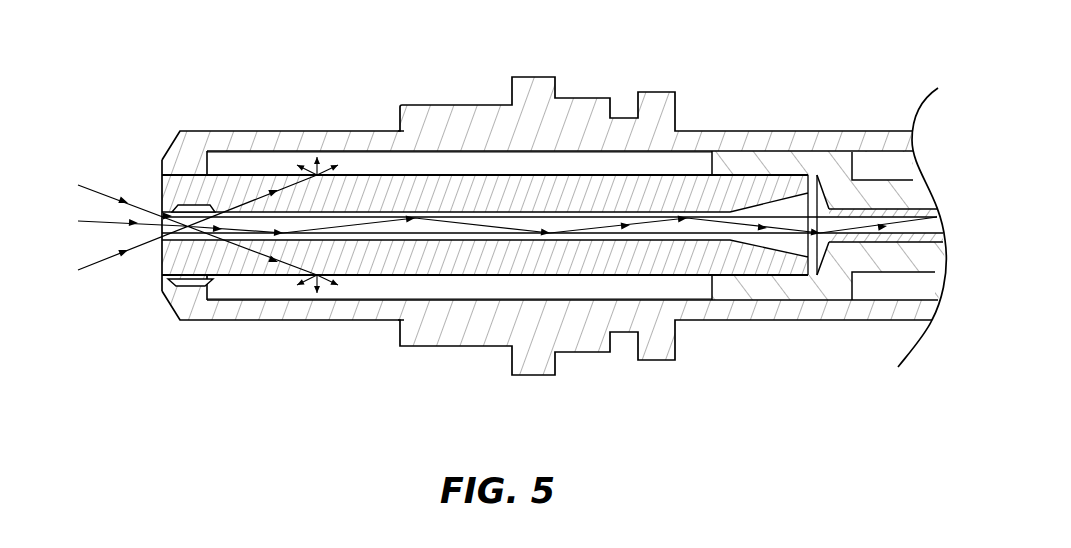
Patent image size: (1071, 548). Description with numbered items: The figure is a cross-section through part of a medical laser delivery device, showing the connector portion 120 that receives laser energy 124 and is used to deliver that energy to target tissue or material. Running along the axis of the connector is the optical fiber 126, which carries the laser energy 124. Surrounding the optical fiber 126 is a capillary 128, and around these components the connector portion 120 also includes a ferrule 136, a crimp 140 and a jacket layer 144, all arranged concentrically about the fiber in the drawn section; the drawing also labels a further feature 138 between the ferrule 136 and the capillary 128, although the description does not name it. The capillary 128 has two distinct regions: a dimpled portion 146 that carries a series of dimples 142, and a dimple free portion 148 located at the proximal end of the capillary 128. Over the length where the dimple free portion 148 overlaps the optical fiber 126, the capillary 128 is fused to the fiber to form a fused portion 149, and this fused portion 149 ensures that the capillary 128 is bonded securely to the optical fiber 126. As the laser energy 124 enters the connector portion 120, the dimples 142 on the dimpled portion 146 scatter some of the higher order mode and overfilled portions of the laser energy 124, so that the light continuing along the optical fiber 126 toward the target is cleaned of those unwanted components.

The connector portion 120 is at (197, 88).
The laser energy 124 is at (88, 262).
The optical fiber 126 is at (385, 232).
The capillary 128 is at (235, 258).
The ferrule 136 is at (202, 140).
The air gap 138 is at (247, 160).
The crimp 140 is at (737, 288).
The dimples 142 is at (365, 172).
The jacket layer 144 is at (847, 237).
The dimpled portion 146 is at (433, 277).
The dimple free portion 148 is at (172, 285).
The fused portion 149 is at (188, 209).